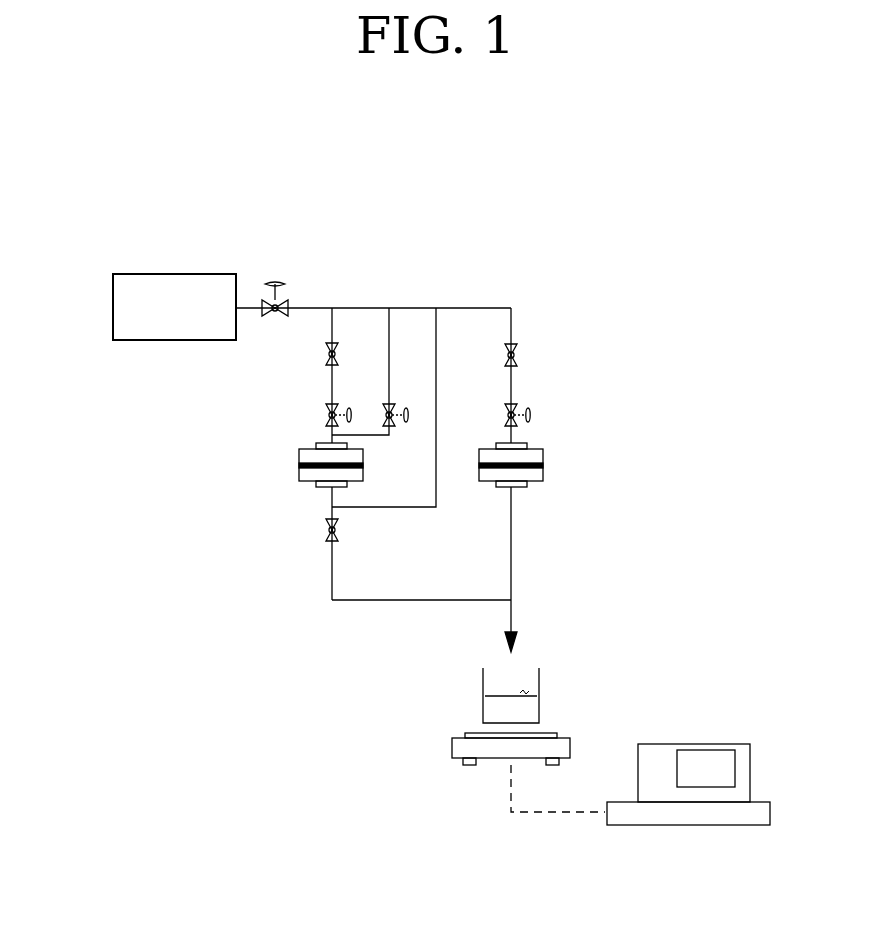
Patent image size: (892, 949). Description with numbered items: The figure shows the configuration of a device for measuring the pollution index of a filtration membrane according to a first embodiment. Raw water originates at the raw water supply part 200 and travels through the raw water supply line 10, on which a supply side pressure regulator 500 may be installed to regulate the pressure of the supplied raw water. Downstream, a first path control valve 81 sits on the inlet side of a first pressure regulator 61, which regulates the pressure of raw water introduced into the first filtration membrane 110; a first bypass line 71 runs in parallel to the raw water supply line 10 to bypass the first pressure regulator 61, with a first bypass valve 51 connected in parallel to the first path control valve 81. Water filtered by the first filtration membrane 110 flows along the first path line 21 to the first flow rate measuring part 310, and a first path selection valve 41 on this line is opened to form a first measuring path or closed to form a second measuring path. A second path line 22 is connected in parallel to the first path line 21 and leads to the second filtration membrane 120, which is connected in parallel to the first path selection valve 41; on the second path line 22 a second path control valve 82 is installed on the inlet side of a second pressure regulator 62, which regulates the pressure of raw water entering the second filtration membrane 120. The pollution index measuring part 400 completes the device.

The raw water supply part 200 is at (162, 274).
The raw water supply line 10 is at (318, 307).
The supply side pressure regulator 500 is at (280, 280).
The first path control valve 81 is at (336, 343).
The first pressure regulator 61 is at (338, 402).
The first bypass line 71 is at (390, 307).
The first bypass valve 51 is at (396, 403).
The second path line 22 is at (493, 307).
The second path control valve 82 is at (516, 349).
The second pressure regulator 62 is at (516, 406).
The first filtration membrane 110 is at (299, 463).
The second filtration membrane 120 is at (543, 464).
The first path selection valve 41 is at (326, 530).
The first path line 21 is at (384, 602).
The first flow rate measuring part 310 is at (436, 758).
The pollution index measuring part 400 is at (697, 825).